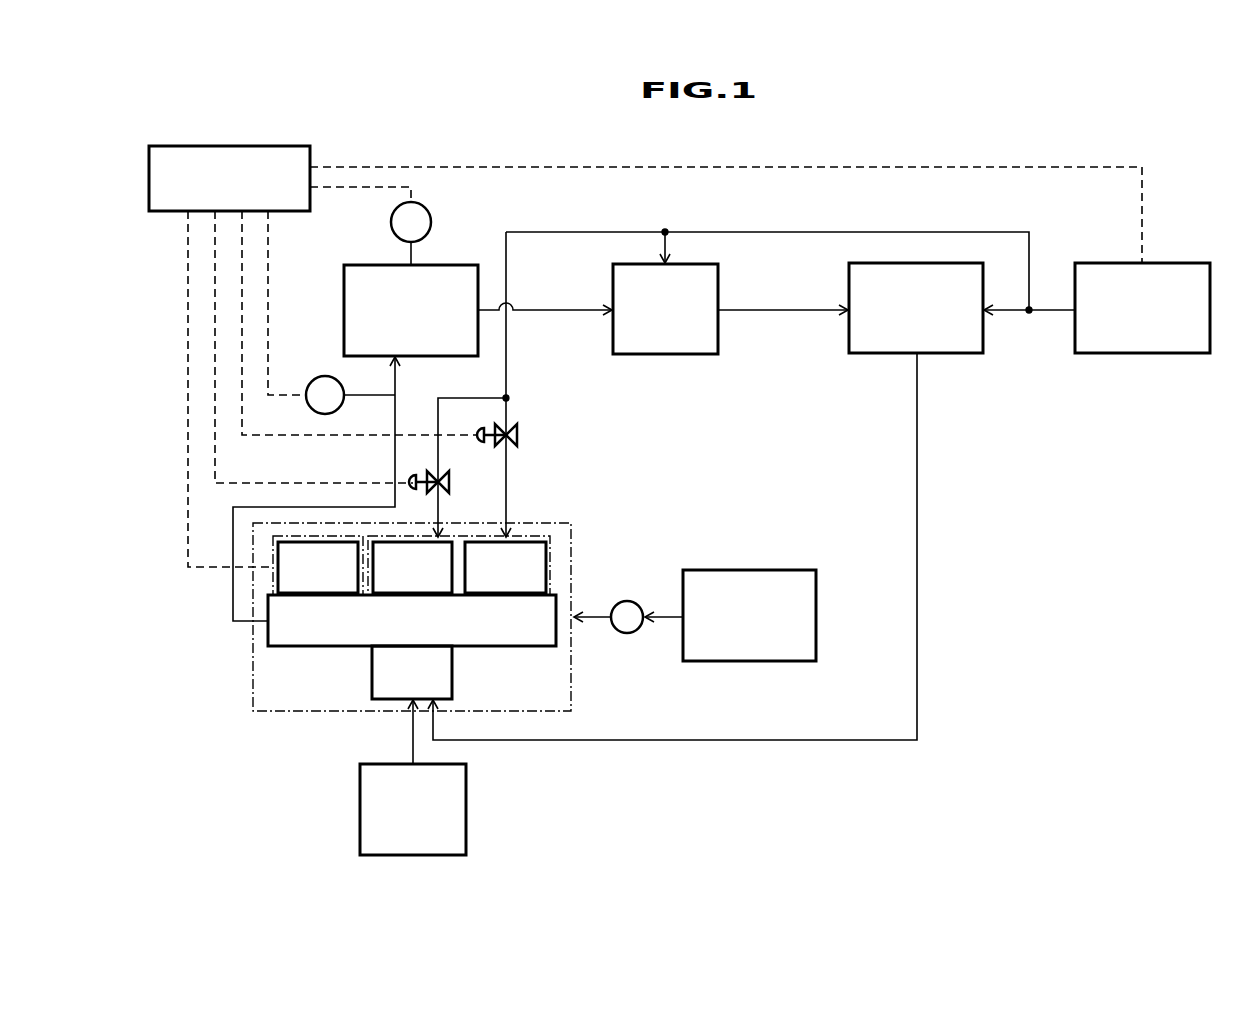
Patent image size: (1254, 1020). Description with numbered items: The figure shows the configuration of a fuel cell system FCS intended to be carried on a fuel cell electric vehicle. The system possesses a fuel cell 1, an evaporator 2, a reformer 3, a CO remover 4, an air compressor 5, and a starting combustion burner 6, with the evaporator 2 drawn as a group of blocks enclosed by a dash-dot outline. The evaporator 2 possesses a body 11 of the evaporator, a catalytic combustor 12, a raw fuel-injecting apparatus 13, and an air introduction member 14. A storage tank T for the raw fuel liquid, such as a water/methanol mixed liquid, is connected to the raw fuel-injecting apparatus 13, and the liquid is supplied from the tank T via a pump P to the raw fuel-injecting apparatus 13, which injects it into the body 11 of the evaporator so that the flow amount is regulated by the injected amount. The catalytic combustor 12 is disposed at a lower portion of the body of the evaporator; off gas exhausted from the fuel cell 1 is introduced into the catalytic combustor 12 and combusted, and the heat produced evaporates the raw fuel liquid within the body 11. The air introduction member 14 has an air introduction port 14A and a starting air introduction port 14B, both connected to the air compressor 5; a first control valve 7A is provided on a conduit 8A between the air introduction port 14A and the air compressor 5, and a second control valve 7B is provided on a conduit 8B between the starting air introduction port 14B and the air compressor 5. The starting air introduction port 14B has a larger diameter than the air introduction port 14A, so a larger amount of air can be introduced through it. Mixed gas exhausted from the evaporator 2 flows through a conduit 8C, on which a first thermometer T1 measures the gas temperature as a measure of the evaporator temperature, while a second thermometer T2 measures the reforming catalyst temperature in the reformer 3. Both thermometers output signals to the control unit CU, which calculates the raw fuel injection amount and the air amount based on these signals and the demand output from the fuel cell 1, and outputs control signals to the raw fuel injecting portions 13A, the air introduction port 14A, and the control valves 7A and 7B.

The fuel cell 1 is at (885, 356).
The evaporator 2 is at (548, 711).
The reformer 3 is at (344, 302).
The CO remover 4 is at (690, 356).
The air compressor 5 is at (1178, 356).
The starting combustion burner 6 is at (462, 810).
The first control valve 7A is at (449, 484).
The second control valve 7B is at (517, 437).
The conduit 8A is at (438, 415).
The conduit 8B is at (506, 490).
The conduit 8C is at (395, 408).
The body of the evaporator 11 is at (322, 643).
The catalytic combustor 12 is at (380, 700).
The raw fuel-injecting apparatus 13 is at (275, 557).
The raw fuel injecting portions 13A is at (272, 587).
The air introduction member 14 is at (528, 533).
The air introduction port 14A is at (447, 583).
The starting air introduction port 14B is at (546, 578).
The control unit CU is at (280, 146).
The first thermometer T1 is at (350, 395).
The second thermometer T2 is at (411, 233).
The storage tank T is at (758, 570).
The pump P is at (628, 617).
The fuel cell system FCS is at (1166, 164).